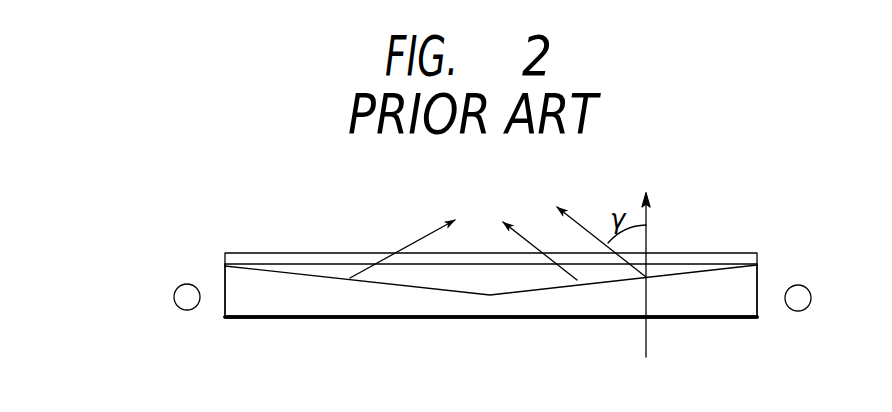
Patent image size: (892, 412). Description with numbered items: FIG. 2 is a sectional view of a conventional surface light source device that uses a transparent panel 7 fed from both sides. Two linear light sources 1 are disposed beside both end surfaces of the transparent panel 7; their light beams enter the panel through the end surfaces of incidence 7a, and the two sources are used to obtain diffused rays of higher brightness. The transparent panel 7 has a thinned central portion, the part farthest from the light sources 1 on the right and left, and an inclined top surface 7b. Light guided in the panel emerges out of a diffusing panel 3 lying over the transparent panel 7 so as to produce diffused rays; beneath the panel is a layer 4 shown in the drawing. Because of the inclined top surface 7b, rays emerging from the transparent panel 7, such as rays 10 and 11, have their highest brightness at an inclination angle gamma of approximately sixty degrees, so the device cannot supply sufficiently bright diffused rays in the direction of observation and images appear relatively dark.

The linear light source 1 is at (183, 310).
The diffusing panel 3 is at (707, 260).
The reflector 4 is at (702, 320).
The transparent panel 7 is at (353, 307).
The end surface of incidence 7a is at (224, 313).
The inclined top surface 7b is at (312, 276).
The ray 10 is at (588, 227).
The ray 11 is at (418, 238).